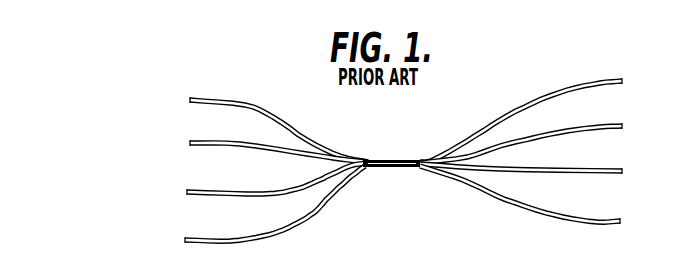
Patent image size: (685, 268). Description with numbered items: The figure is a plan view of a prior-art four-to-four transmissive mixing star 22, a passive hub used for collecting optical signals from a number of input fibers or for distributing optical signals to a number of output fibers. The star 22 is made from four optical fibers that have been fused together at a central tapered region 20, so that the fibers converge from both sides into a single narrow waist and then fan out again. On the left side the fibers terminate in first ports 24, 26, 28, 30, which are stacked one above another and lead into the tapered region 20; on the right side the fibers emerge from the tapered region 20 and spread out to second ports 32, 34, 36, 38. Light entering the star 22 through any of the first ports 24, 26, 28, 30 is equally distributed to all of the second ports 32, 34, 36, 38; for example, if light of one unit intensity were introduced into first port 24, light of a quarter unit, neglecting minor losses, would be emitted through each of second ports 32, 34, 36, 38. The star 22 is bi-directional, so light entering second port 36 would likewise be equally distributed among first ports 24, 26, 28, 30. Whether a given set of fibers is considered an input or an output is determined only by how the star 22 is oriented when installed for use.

The tapered region 20 is at (403, 158).
The star 22 is at (100, 157).
The first port 24 is at (190, 97).
The first port 26 is at (190, 142).
The first port 28 is at (188, 189).
The first port 30 is at (185, 238).
The second port 32 is at (622, 78).
The second port 34 is at (637, 107).
The second port 36 is at (622, 168).
The second port 38 is at (620, 216).